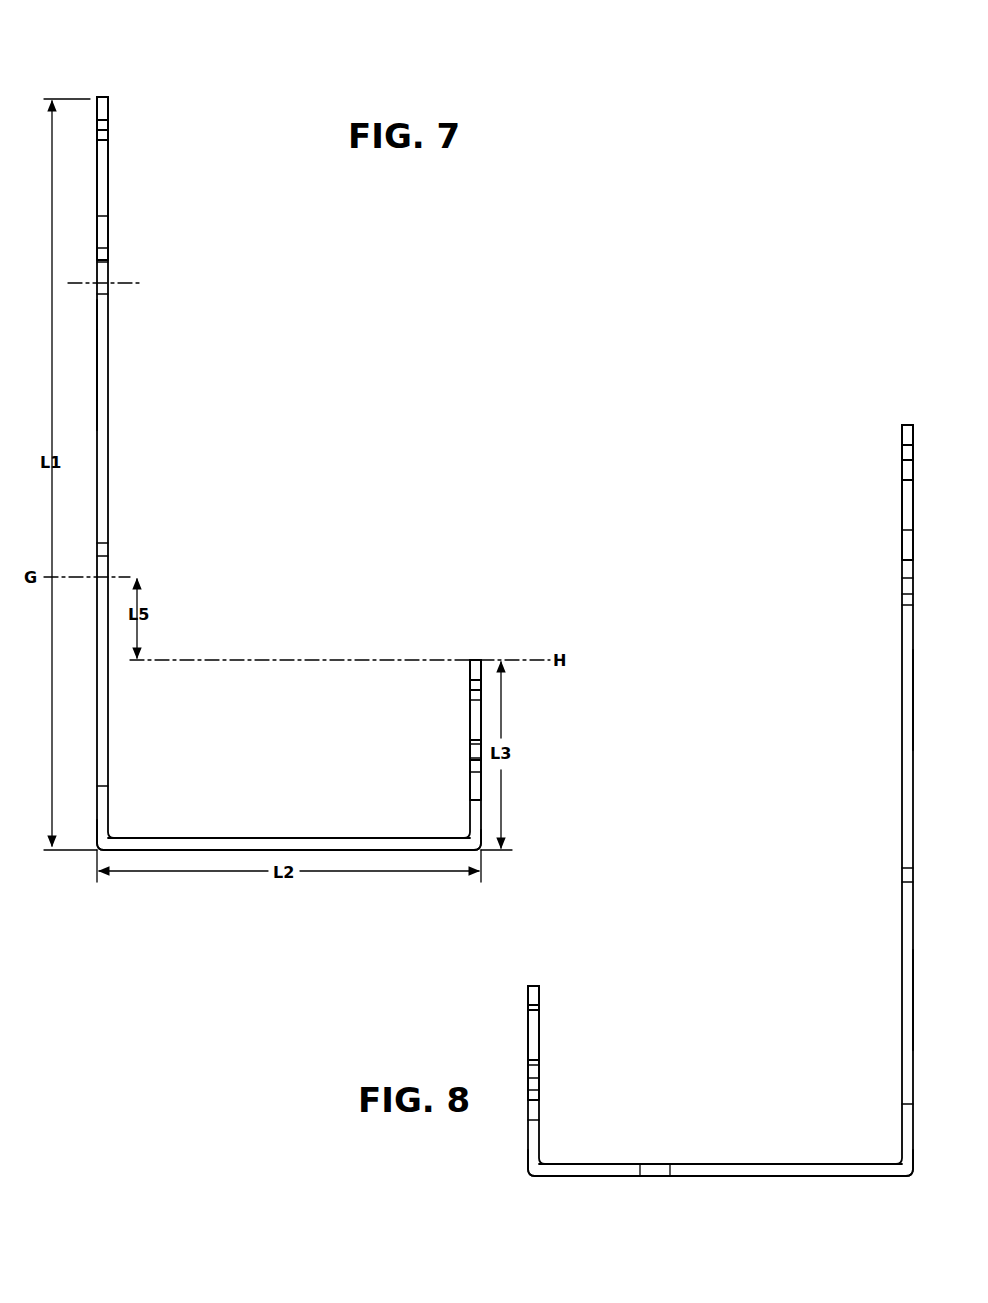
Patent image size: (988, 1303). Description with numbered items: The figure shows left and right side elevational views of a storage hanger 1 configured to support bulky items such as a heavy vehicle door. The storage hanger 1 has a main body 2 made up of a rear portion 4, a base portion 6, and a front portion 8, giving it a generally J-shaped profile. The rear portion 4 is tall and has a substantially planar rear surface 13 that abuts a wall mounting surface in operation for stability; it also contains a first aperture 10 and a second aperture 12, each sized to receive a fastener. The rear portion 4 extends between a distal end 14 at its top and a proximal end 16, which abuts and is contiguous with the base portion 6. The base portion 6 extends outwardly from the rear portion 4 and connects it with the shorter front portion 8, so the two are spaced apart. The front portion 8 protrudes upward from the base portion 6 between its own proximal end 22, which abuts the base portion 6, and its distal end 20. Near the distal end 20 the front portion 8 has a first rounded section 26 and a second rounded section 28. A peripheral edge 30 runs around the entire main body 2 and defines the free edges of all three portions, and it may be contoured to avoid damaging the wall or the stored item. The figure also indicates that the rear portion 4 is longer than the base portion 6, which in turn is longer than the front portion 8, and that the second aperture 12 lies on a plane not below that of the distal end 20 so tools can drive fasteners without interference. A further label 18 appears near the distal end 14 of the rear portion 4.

In FIG. 7, the storage hanger 1 is at (297, 338).
In FIG. 8, the storage hanger 1 is at (715, 668).
In FIG. 7, the main body 2 is at (111, 413).
In FIG. 8, the main body 2 is at (918, 728).
In FIG. 7, the rear portion 4 is at (108, 133).
In FIG. 8, the rear portion 4 is at (902, 477).
In FIG. 7, the base portion 6 is at (310, 836).
In FIG. 8, the base portion 6 is at (758, 1163).
In FIG. 7, the front portion 8 is at (474, 712).
In FIG. 8, the front portion 8 is at (538, 1026).
In FIG. 7, the first aperture 10 is at (106, 260).
In FIG. 8, the first aperture 10 is at (902, 588).
In FIG. 7, the second aperture 12 is at (106, 554).
In FIG. 8, the second aperture 12 is at (902, 878).
In FIG. 7, the rear surface 13 is at (94, 160).
In FIG. 8, the rear surface 13 is at (918, 550).
In FIG. 7, the distal end 14 is at (99, 53).
In FIG. 8, the distal end 14 is at (898, 418).
In FIG. 7, the proximal end 16 is at (88, 868).
In FIG. 8, the proximal end 16 is at (913, 1182).
In FIG. 7, the upper end of first flange 18 is at (103, 86).
In FIG. 8, the upper end of first flange 18 is at (906, 411).
In FIG. 7, the distal end 20 is at (472, 614).
In FIG. 8, the distal end 20 is at (527, 966).
In FIG. 7, the proximal end 22 is at (490, 856).
In FIG. 8, the proximal end 22 is at (525, 1188).
In FIG. 7, the first rounded section 26 is at (474, 650).
In FIG. 8, the first rounded section 26 is at (541, 978).
In FIG. 7, the second rounded section 28 is at (456, 752).
In FIG. 8, the second rounded section 28 is at (545, 1078).
In FIG. 7, the peripheral edge 30 is at (106, 354).
In FIG. 8, the peripheral edge 30 is at (913, 1003).